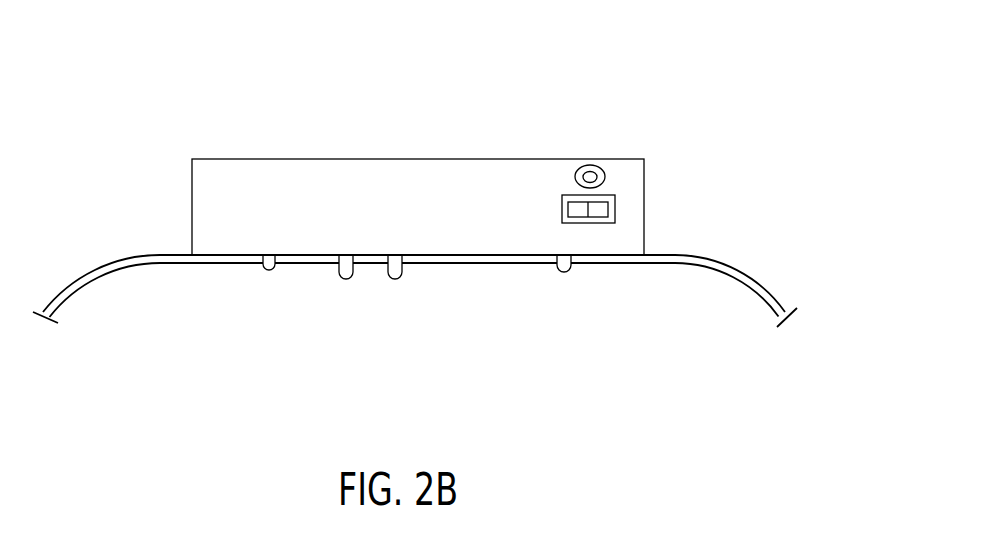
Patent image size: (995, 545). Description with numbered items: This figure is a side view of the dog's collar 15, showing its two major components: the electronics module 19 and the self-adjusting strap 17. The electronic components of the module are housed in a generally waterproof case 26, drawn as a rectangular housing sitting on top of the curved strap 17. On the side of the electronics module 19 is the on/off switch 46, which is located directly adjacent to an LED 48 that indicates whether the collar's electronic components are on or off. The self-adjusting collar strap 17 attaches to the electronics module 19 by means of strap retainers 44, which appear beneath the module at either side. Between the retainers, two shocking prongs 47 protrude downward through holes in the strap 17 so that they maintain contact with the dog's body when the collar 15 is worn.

The dog's collar 15 is at (653, 116).
The self-adjusting strap 17 is at (765, 287).
The electronics module 19 is at (492, 108).
The waterproof case 26 is at (391, 168).
The strap retainers 44 is at (268, 271).
The on/off switch 46 is at (615, 205).
The shocking prongs 47 is at (347, 281).
The LED 48 is at (589, 166).